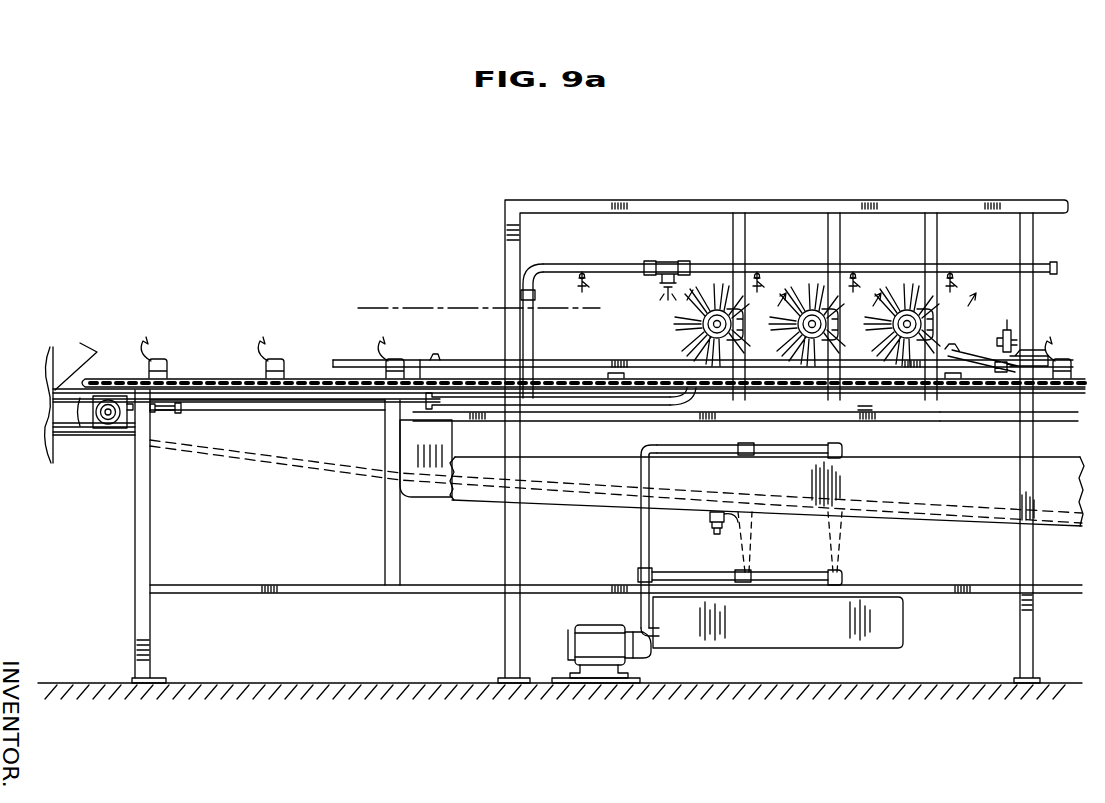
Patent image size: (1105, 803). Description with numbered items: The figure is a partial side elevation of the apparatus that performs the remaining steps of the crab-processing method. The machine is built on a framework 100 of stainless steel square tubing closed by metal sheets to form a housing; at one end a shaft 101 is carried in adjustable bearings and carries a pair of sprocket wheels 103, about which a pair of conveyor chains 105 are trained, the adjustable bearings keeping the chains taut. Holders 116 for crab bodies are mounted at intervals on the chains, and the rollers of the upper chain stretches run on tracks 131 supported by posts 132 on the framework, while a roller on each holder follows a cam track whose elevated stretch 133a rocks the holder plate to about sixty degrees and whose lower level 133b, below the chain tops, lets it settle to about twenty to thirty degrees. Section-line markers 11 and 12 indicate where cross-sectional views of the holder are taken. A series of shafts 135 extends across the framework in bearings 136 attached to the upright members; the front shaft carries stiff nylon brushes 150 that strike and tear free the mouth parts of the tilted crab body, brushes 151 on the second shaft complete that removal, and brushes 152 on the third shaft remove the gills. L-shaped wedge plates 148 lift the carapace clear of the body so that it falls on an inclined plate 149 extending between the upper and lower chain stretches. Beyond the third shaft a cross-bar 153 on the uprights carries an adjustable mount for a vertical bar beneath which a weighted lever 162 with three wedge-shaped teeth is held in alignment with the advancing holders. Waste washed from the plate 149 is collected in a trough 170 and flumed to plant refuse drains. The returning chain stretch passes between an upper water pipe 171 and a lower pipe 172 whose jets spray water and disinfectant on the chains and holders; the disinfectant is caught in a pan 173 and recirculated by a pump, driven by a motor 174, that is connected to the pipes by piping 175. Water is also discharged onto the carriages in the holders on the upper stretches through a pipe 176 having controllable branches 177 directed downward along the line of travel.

The framework 100 is at (753, 196).
The shaft 101 is at (103, 428).
The sprocket wheels 103 is at (86, 398).
The conveyor chains 105 is at (262, 393).
The holders 116 is at (258, 356).
The tracks 131 is at (762, 396).
The posts 132 is at (552, 410).
The elevated stretch of cam track 133a is at (708, 406).
The lower level of cam track 133b is at (870, 414).
The shafts 135 is at (701, 334).
The bearings 136 is at (727, 307).
The wedge plates 148 is at (463, 360).
The plate 149 is at (988, 453).
The brushes 150 is at (697, 319).
The brushes 151 is at (789, 298).
The brushes 152 is at (886, 298).
The cross-bar 153 is at (1029, 333).
The lever 162 is at (993, 362).
The trough 170 is at (946, 495).
The upper water pipe 171 is at (748, 446).
The lower water pipe 172 is at (749, 571).
The pan 173 is at (896, 633).
The motor 174 is at (588, 633).
The piping 175 is at (652, 552).
The pipe 176 is at (703, 266).
The controllable branches 177 is at (590, 291).
The section line 11- 11 is at (443, 326).
The section line 12- 12 is at (367, 306).